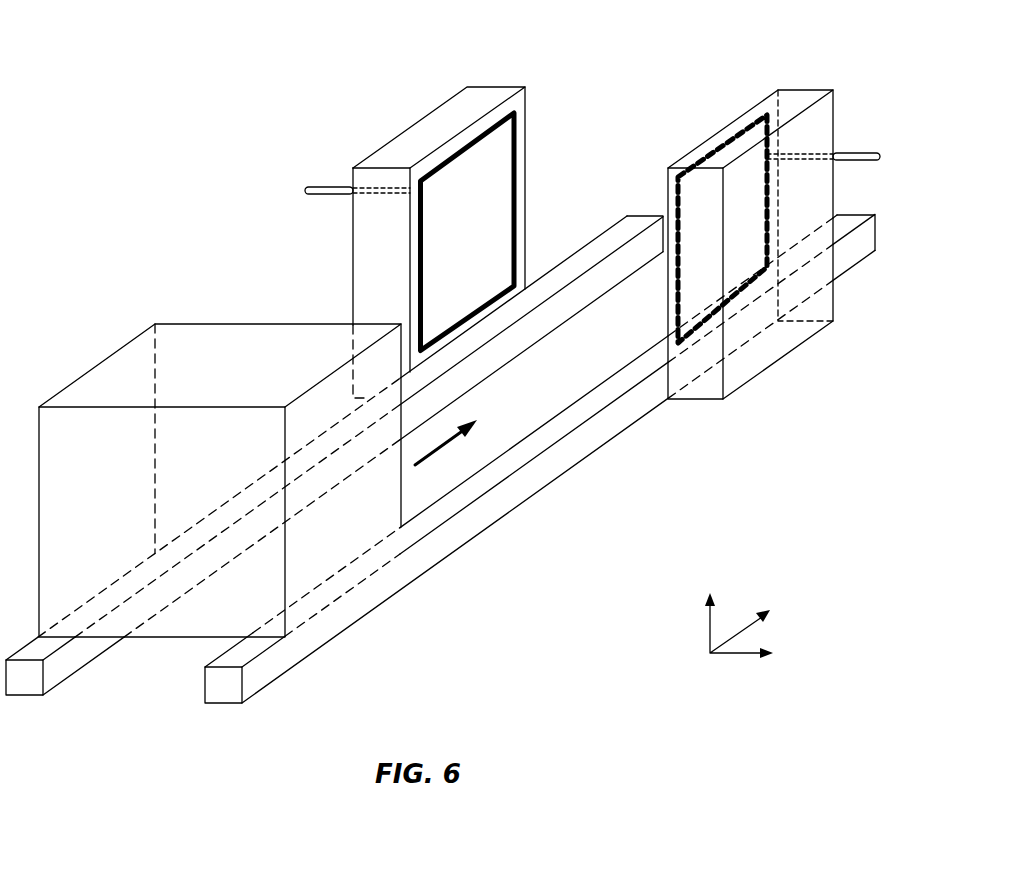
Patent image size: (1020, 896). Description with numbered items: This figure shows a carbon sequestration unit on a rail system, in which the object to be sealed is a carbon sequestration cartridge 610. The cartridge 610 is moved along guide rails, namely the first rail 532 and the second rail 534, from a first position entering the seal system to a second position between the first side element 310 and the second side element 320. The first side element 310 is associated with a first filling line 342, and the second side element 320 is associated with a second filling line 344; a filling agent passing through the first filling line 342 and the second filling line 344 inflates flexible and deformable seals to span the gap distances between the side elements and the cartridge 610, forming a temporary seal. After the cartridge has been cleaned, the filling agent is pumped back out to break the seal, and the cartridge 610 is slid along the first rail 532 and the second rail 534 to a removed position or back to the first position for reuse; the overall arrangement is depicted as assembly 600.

The metrology system 600 is at (136, 43).
The first side element 310 is at (488, 86).
The second side element 320 is at (813, 90).
The first filling line 342 is at (330, 188).
The second filling line 344 is at (858, 152).
The first rail 532 is at (642, 214).
The second rail 534 is at (862, 215).
The carbon sequestration cartridge 610 is at (118, 350).